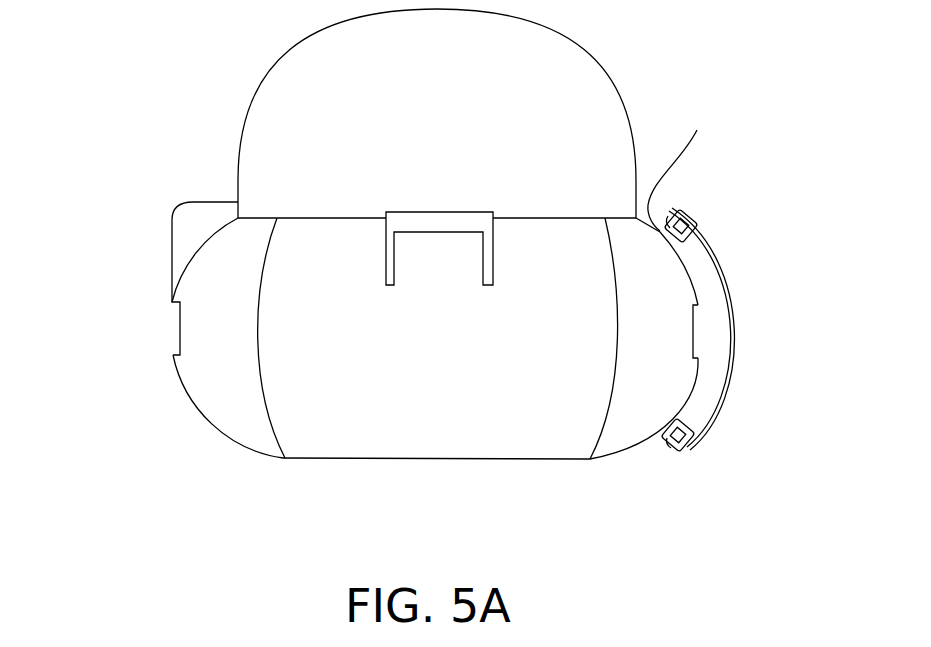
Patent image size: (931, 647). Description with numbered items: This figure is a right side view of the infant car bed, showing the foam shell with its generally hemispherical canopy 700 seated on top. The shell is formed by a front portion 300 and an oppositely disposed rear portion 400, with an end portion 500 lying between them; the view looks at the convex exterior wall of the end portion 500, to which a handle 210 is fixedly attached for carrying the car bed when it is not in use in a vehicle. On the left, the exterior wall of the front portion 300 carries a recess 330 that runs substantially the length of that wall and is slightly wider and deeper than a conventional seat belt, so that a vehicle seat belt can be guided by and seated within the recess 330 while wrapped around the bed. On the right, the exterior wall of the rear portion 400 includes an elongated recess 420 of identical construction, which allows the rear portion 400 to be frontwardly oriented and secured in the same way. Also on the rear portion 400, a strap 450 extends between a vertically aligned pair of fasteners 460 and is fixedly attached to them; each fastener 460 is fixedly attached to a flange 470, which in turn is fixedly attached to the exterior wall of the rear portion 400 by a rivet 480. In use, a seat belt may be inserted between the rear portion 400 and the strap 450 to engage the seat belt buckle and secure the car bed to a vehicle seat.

The canopy 700 is at (593, 132).
The recess 330 is at (180, 332).
The front portion 300 is at (218, 427).
The end portion 500 is at (552, 462).
The rear portion 400 is at (628, 450).
The elongated recess 420 is at (695, 333).
The strap 450 is at (732, 285).
The flange 470 is at (690, 158).
The fastener 460 is at (690, 217).
The rivet 480 is at (665, 238).
The handle 210 is at (402, 218).